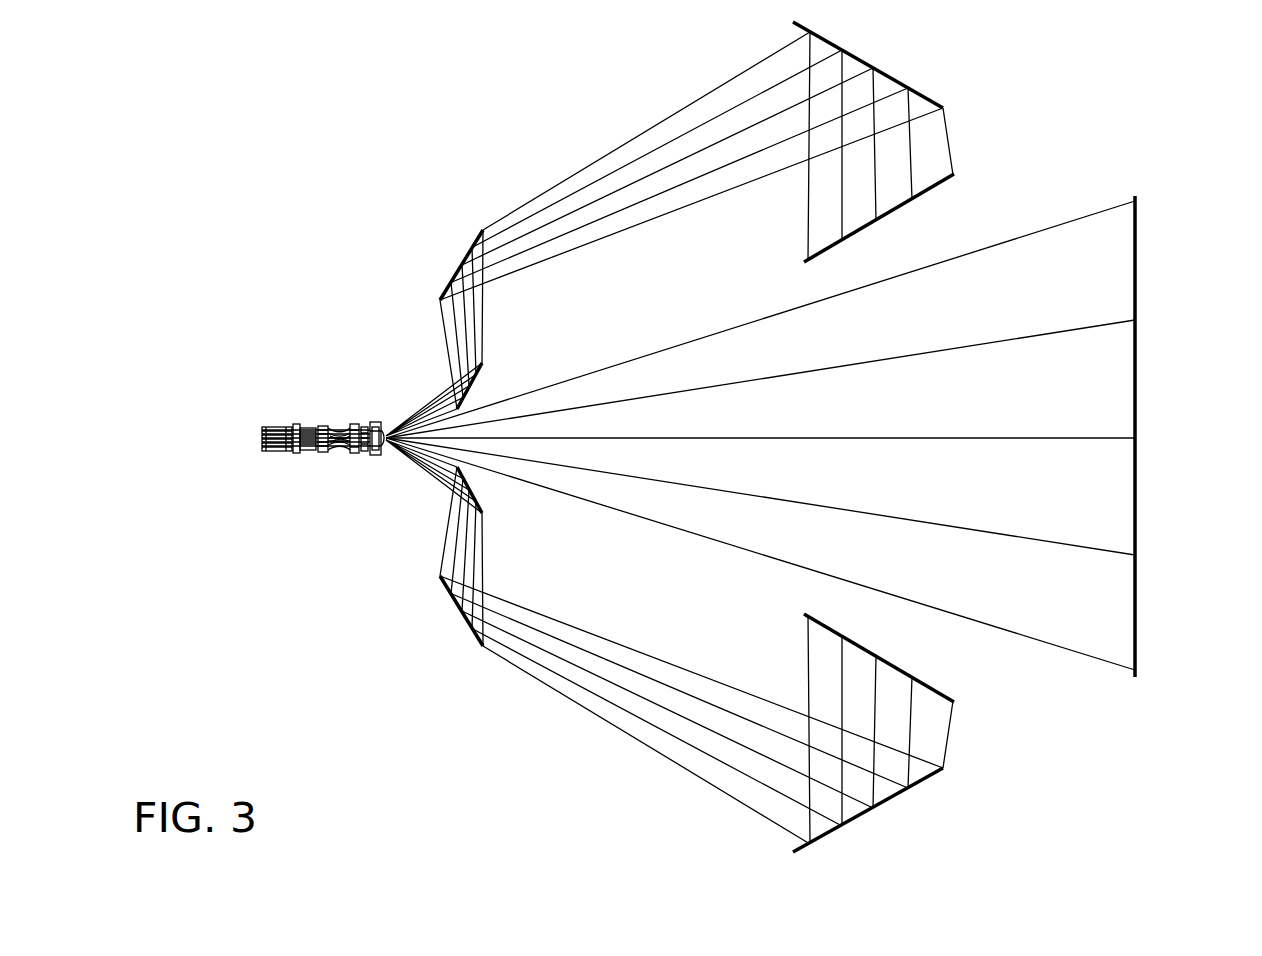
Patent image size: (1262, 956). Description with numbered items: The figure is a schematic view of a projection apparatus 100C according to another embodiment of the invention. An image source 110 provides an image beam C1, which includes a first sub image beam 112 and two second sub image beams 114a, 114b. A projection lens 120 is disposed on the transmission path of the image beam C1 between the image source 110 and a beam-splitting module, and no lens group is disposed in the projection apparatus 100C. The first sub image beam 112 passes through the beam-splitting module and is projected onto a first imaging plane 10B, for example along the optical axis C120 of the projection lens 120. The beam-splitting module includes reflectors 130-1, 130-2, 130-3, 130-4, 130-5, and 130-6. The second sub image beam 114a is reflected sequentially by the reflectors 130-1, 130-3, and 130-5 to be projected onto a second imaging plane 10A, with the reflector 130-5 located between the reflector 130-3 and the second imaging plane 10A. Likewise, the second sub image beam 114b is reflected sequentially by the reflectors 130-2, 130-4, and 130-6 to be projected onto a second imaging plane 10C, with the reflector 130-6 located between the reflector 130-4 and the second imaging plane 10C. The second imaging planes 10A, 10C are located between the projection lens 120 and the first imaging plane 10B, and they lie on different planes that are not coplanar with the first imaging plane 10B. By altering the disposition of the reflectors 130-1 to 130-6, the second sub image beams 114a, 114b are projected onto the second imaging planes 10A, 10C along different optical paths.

The projection apparatus 100C is at (240, 130).
The image source 110 is at (267, 460).
The projection lens 120 is at (303, 460).
The image beam C1 is at (344, 448).
The optical axis of the projection lens C120 is at (386, 424).
The first sub image beam 112 is at (856, 432).
The second sub image beam 114a is at (583, 157).
The second sub image beam 114b is at (645, 739).
The reflector 130-1 is at (484, 368).
The reflector 130-2 is at (484, 508).
The reflector 130-3 is at (458, 270).
The reflector 130-4 is at (458, 606).
The reflector 130-5 is at (898, 82).
The reflector 130-6 is at (896, 792).
The second imaging plane 10A is at (937, 195).
The first imaging plane 10B is at (1150, 448).
The second imaging plane 10C is at (950, 667).